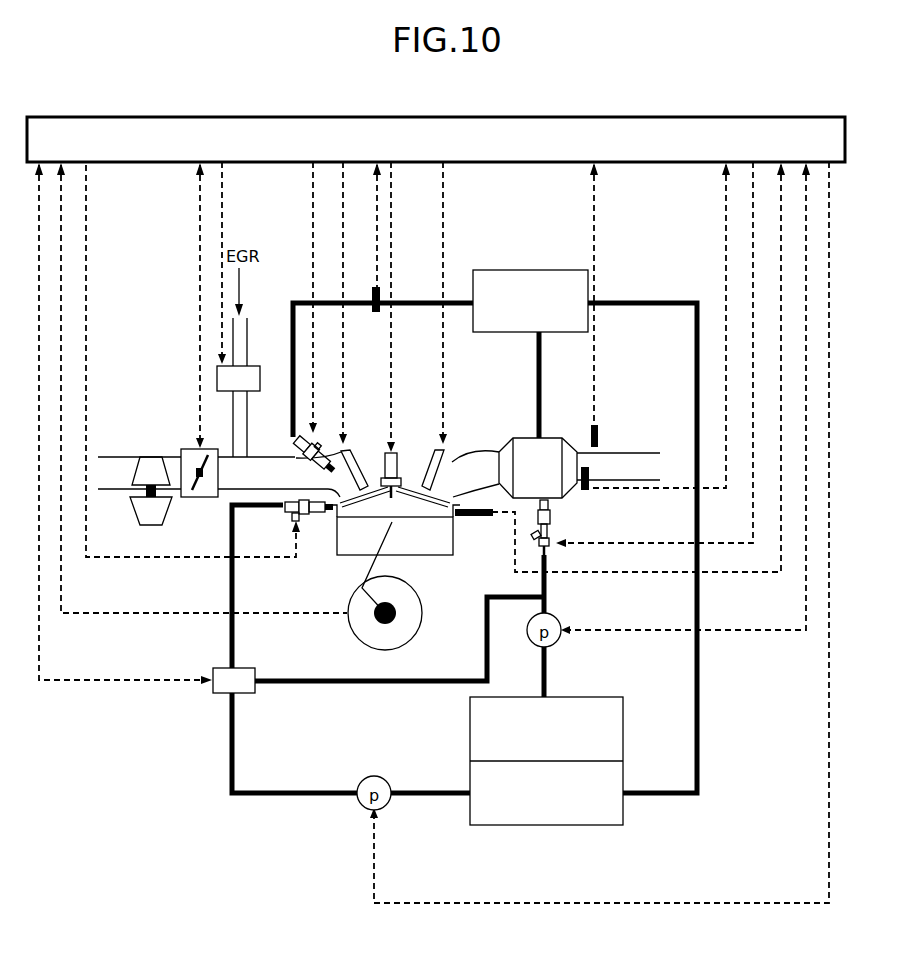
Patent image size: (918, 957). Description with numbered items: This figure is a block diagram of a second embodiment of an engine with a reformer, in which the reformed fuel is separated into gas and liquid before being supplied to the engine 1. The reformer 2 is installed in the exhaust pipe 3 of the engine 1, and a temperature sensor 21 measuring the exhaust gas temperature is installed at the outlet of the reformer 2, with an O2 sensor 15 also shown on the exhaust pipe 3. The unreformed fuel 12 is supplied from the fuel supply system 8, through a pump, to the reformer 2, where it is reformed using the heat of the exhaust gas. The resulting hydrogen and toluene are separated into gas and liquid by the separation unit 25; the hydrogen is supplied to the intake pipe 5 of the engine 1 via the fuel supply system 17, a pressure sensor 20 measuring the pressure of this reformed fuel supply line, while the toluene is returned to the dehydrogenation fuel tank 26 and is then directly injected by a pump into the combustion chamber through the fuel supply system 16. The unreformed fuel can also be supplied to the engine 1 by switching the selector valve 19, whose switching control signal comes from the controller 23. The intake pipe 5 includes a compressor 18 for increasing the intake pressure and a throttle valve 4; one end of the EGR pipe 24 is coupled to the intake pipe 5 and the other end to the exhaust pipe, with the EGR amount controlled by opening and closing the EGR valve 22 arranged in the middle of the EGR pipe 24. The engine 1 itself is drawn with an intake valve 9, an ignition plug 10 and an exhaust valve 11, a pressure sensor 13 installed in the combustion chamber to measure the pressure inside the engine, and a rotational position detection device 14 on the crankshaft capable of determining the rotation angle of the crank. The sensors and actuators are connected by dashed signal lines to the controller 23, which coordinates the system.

The engine 1 is at (430, 553).
The reformer 2 is at (551, 438).
The exhaust pipe 3 is at (652, 462).
The throttle valve 4 is at (200, 498).
The intake pipe 5 is at (108, 456).
The fuel supply system for unreformed fuel to reformer 8 is at (550, 524).
The intake valve 9 is at (350, 454).
The ignition plug 10 is at (400, 450).
The exhaust valve 11 is at (451, 446).
The unreformed fuel 12 is at (470, 731).
The pressure sensor 13 is at (470, 520).
The rotational position detection device 14 is at (396, 615).
The O2 sensor 15 is at (598, 426).
The fuel supply system 16 is at (313, 516).
The fuel supply system 17 is at (306, 444).
The compressor 18 is at (150, 462).
The selector valve 19 is at (240, 694).
The pressure sensor 20 is at (376, 313).
The temperature sensor 21 is at (590, 490).
The EGR valve 22 is at (216, 376).
The controller 23 is at (630, 130).
The EGR pipe 24 is at (242, 328).
The separation unit 25 is at (530, 268).
The dehydrogenation fuel tank 26 is at (545, 826).